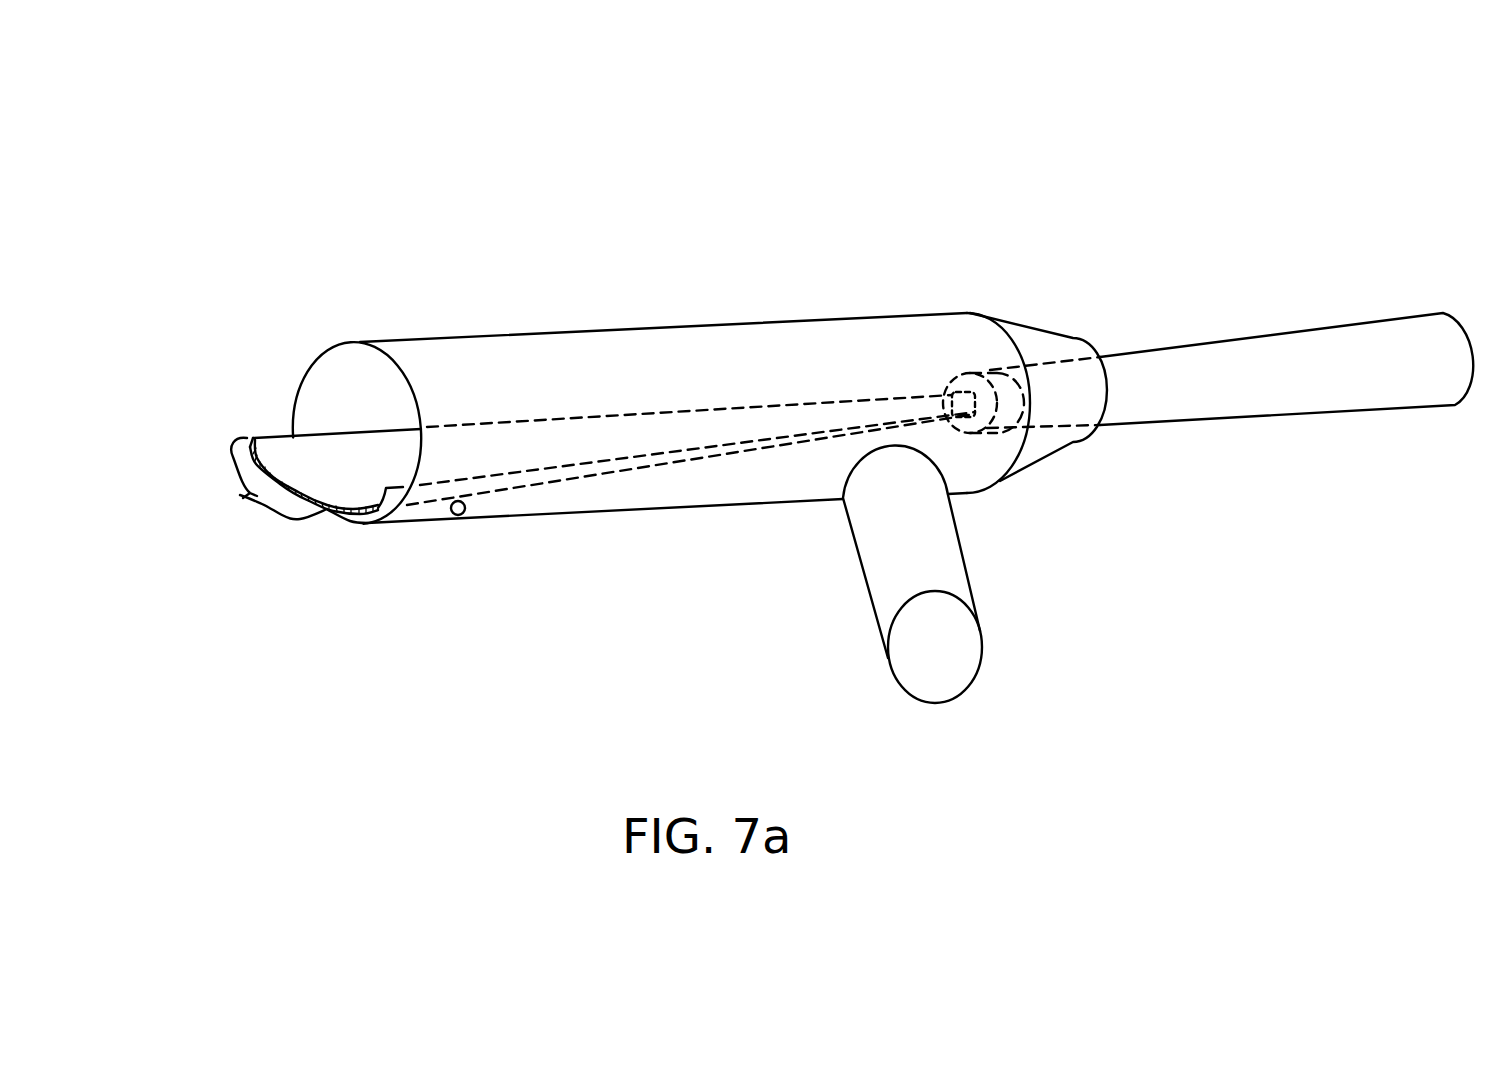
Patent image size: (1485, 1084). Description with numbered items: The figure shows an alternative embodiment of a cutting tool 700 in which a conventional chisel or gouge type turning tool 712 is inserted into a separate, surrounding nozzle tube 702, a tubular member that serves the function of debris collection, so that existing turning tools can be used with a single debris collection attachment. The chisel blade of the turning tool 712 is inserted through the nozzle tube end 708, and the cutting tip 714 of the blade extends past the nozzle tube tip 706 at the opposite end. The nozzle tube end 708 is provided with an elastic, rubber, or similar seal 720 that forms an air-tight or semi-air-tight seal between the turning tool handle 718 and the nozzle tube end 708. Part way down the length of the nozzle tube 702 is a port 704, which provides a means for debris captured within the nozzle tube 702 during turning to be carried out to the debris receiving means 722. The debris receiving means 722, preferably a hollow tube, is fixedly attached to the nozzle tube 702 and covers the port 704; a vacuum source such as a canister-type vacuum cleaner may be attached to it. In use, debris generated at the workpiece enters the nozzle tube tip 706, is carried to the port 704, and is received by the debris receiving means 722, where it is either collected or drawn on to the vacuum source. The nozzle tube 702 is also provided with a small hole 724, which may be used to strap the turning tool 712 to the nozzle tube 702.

The cutting tool 700 is at (795, 138).
The nozzle tube 702 is at (518, 345).
The port 704 is at (882, 467).
The nozzle tube tip 706 is at (325, 353).
The nozzle tube end 708 is at (938, 312).
The turning tool 712 is at (317, 460).
The cutting tip 714 is at (245, 497).
The turning tool handle 718 is at (1245, 350).
The seal 720 is at (1040, 340).
The debris receiving means 722 is at (980, 622).
The small hole 724 is at (453, 513).